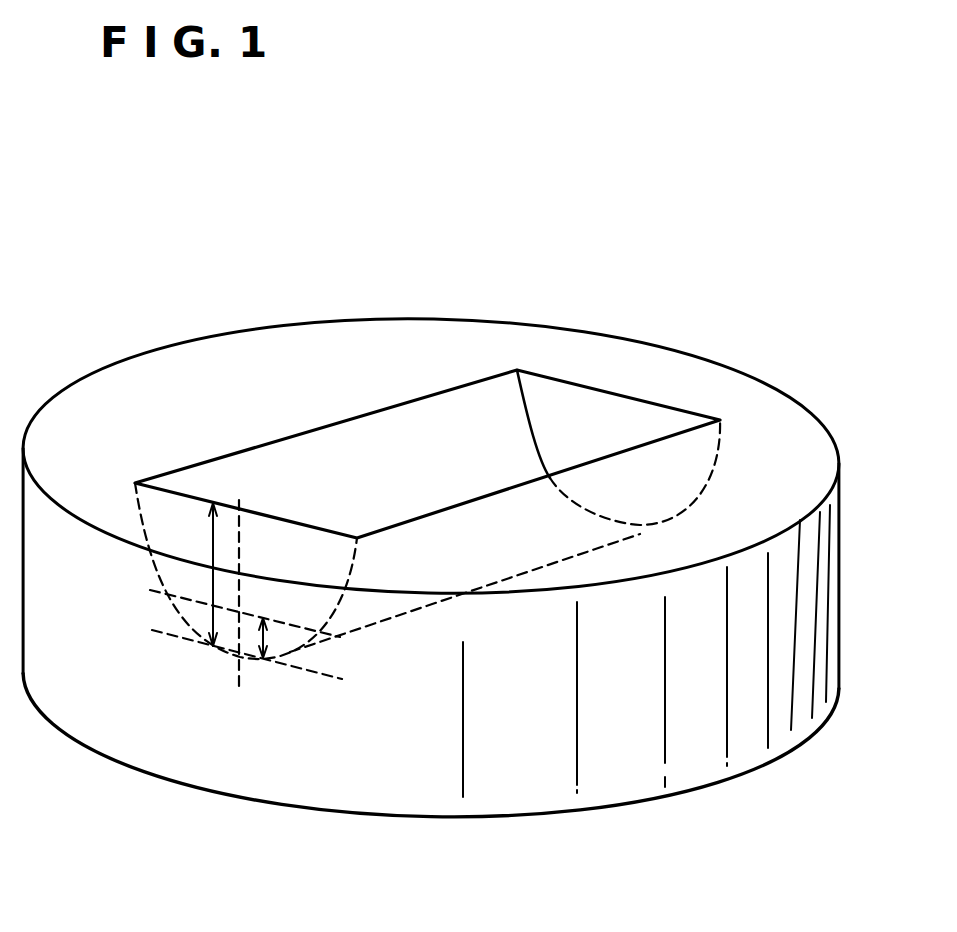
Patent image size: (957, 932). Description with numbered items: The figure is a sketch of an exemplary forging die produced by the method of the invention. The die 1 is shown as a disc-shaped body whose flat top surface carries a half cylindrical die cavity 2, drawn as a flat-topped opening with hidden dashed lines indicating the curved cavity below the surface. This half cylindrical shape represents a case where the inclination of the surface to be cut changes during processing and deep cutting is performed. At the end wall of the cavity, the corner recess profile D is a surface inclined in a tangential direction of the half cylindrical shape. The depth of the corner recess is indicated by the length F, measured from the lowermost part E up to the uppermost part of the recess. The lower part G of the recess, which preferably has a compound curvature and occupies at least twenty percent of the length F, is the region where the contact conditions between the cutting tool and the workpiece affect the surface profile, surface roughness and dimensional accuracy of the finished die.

The die 1 is at (630, 332).
The half cylindrical die cavity 2 is at (375, 470).
The corner recess profile D is at (508, 435).
The lowermost part E is at (236, 652).
The length from the lowermost part to the uppermost part F is at (203, 574).
The lower part G is at (262, 641).